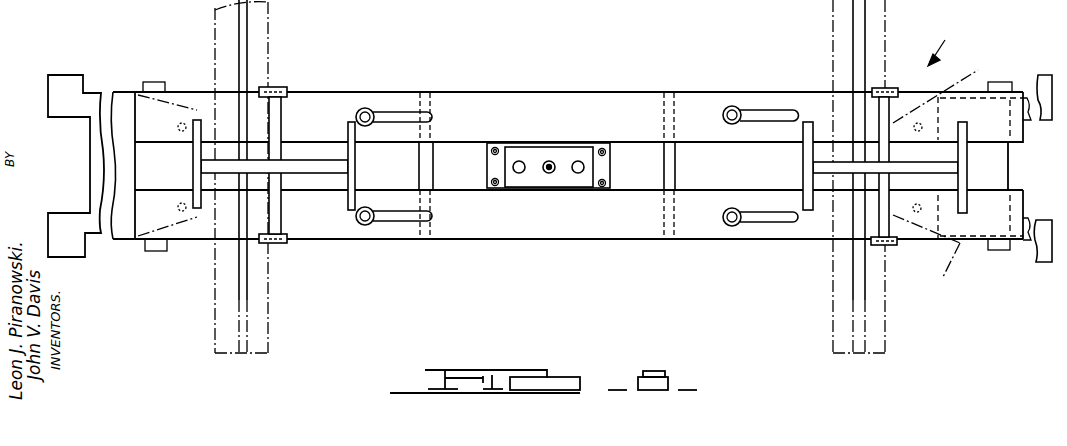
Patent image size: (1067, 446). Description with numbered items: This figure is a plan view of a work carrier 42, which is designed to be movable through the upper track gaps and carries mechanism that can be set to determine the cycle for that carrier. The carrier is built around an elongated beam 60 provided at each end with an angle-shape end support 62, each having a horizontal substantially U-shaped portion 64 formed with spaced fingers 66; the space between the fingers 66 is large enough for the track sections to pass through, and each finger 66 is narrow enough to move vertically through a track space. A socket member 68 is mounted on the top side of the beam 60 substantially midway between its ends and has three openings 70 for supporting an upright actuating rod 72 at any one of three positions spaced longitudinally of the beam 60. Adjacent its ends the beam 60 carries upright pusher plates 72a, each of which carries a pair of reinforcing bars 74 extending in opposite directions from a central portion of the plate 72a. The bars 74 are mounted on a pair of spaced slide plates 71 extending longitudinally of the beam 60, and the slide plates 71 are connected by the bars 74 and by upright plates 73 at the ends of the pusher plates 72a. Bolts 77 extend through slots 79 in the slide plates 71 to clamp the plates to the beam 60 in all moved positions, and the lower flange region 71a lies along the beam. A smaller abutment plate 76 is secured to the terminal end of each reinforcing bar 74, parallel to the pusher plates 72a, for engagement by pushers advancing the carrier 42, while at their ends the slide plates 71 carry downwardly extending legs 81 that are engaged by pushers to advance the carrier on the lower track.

The work carrier 42 is at (947, 43).
The elongated beam 60 is at (624, 150).
The angle-shape end support 62 is at (124, 240).
The horizontal substantially U-shaped portion 64 is at (995, 179).
The finger 66 is at (62, 77).
The socket member 68 is at (569, 158).
The opening 70 is at (579, 173).
The slide plate 71 is at (687, 102).
The bottom flange 71a is at (702, 242).
The upright actuating rod 72 is at (550, 164).
The upright pusher plate 72a is at (297, 162).
The upright plate 73 is at (803, 162).
The reinforcing bar 74 is at (280, 205).
The abutment plate 76 is at (280, 87).
The bolt 77 is at (367, 126).
The slot 79 is at (768, 112).
The downwardly extending leg 81 is at (152, 78).